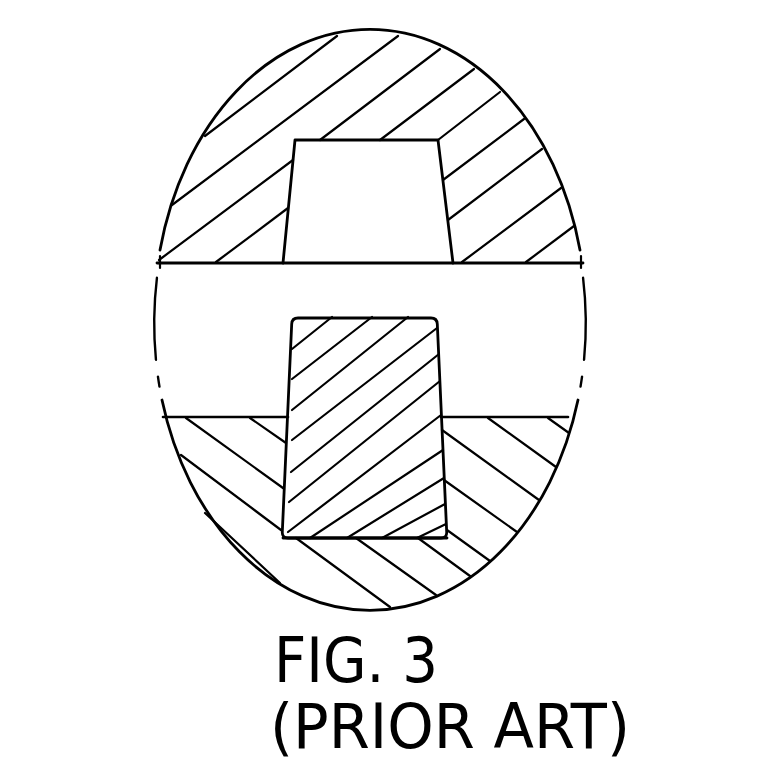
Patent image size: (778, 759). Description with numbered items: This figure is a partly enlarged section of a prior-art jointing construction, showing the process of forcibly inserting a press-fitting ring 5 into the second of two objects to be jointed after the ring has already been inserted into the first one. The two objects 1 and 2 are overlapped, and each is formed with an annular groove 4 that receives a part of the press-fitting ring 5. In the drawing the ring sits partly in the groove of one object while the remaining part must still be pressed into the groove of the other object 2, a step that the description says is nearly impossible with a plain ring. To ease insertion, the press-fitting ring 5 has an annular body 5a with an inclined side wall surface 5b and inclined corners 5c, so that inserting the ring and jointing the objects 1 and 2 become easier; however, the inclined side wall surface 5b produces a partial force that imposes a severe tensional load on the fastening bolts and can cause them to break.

The object to be jointed 1 is at (532, 160).
The object to be jointed 2 is at (530, 492).
The annular groove 4 is at (318, 192).
The press-fitting ring 5 is at (365, 479).
The annular body 5a is at (368, 443).
The inclined side wall surface 5b is at (440, 353).
The inclined corners 5c is at (280, 531).